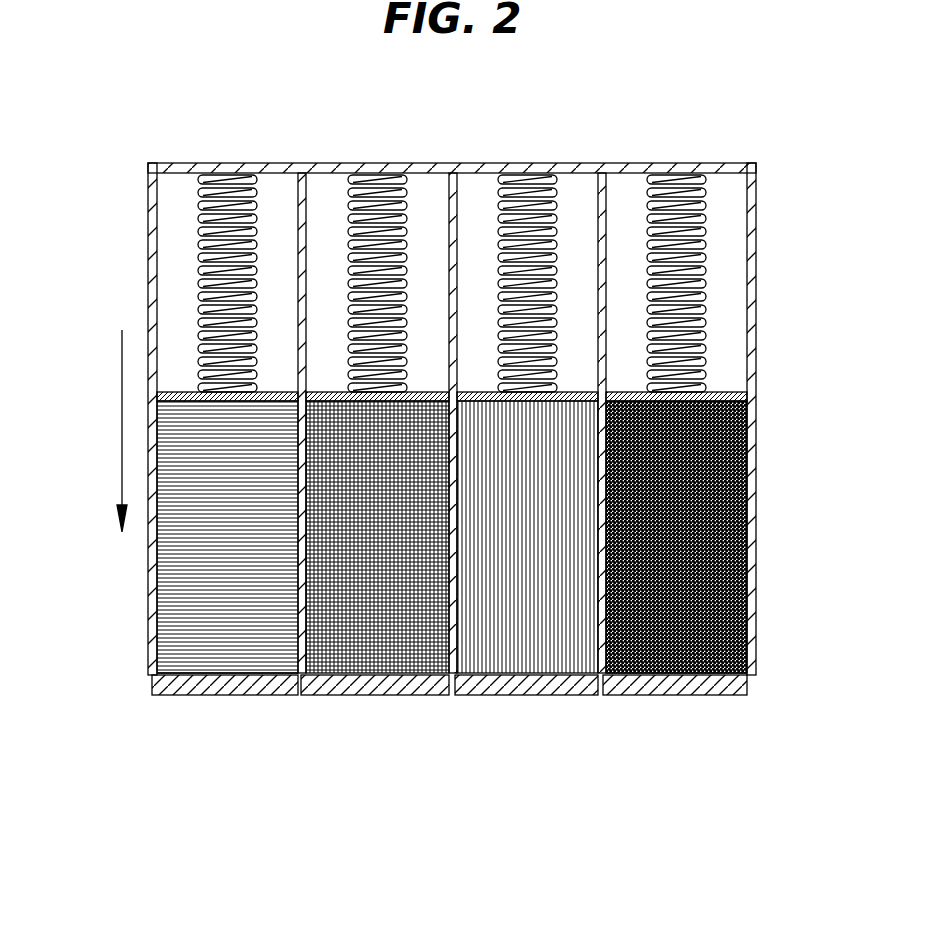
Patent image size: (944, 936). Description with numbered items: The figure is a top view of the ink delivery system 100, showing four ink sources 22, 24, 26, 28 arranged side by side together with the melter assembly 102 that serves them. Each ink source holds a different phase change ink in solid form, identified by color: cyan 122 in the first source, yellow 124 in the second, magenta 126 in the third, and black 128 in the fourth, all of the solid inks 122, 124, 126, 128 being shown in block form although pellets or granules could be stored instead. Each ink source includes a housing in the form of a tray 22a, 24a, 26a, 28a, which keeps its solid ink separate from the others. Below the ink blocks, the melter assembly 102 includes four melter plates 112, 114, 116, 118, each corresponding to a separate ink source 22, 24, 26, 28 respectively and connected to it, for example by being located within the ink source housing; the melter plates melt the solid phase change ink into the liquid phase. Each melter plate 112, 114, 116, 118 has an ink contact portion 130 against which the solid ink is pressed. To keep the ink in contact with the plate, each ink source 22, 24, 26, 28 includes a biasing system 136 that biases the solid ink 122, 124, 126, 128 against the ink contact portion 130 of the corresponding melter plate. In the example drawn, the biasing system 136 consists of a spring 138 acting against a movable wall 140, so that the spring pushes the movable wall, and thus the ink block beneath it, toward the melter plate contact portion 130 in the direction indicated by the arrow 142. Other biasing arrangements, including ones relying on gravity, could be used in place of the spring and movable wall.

The ink delivery system 100 is at (452, 373).
The ink source 22 is at (227, 397).
The ink source 24 is at (377, 396).
The ink source 26 is at (527, 396).
The ink source 28 is at (712, 397).
The tray 22a is at (158, 215).
The tray 24a is at (308, 191).
The tray 26a is at (597, 202).
The tray 28a is at (750, 213).
The melter assembly 102 is at (408, 702).
The melter plate 112 is at (213, 695).
The melter plate 114 is at (380, 695).
The melter plate 116 is at (528, 695).
The melter plate 118 is at (677, 695).
The cyan ink 122 is at (249, 550).
The yellow ink 124 is at (399, 550).
The magenta ink 126 is at (549, 550).
The black ink 128 is at (699, 550).
The ink contact portion 130 is at (171, 669).
The biasing system 136 is at (733, 283).
The spring 138 is at (703, 292).
The movable wall 140 is at (723, 393).
The arrow 142 is at (122, 358).